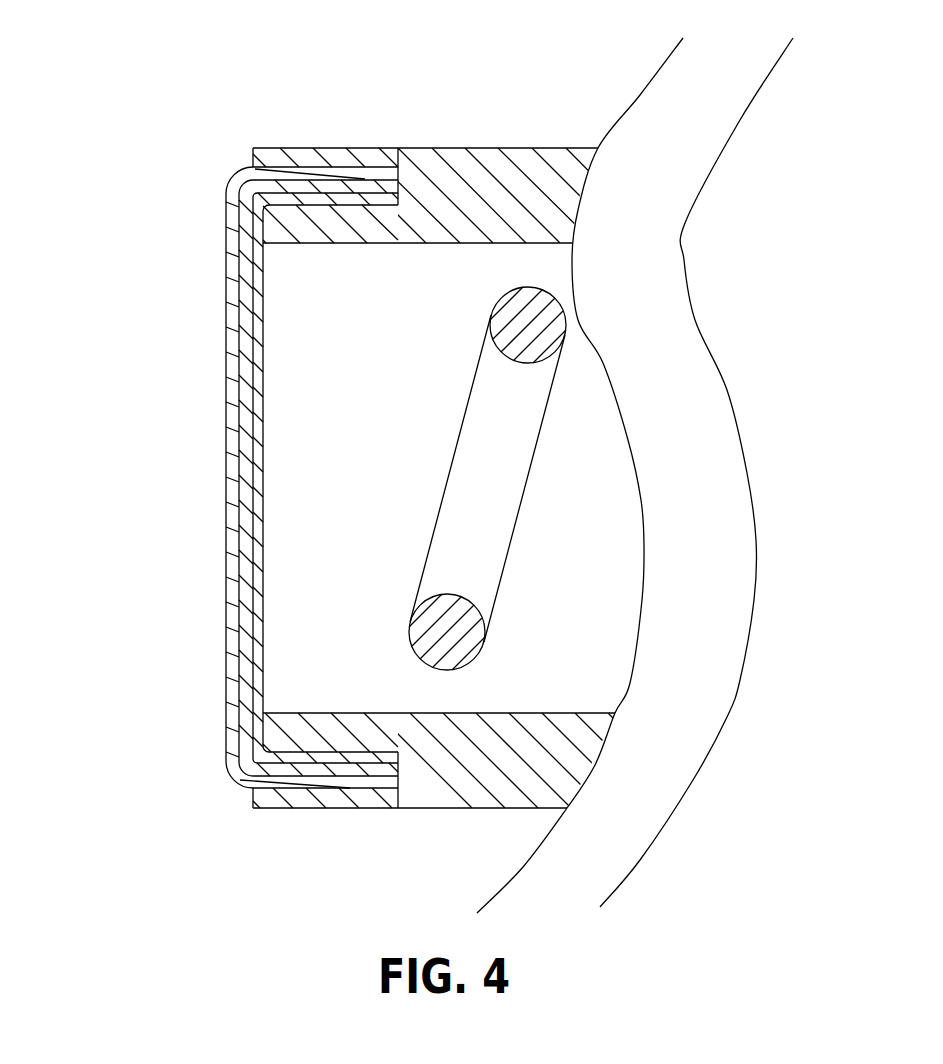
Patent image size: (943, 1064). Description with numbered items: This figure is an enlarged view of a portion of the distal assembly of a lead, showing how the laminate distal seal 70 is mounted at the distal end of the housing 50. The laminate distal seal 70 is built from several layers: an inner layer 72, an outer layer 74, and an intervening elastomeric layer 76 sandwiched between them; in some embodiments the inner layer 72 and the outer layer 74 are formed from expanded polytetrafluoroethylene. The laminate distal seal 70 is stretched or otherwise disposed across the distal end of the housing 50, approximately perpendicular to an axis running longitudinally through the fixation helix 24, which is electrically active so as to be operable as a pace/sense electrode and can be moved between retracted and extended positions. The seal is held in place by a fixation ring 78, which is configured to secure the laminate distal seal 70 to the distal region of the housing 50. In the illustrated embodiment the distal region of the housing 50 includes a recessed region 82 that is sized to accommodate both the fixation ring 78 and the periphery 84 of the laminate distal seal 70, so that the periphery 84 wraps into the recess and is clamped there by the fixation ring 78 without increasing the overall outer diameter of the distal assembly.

The fixation helix 24 is at (475, 537).
The housing 50 is at (503, 162).
The laminate distal seal 70 is at (128, 318).
The inner layer 72 is at (258, 444).
The outer layer 74 is at (232, 391).
The intervening elastomeric layer 76 is at (245, 456).
The fixation ring 78 is at (328, 153).
The recessed region 82 is at (344, 210).
The periphery 84 is at (276, 106).